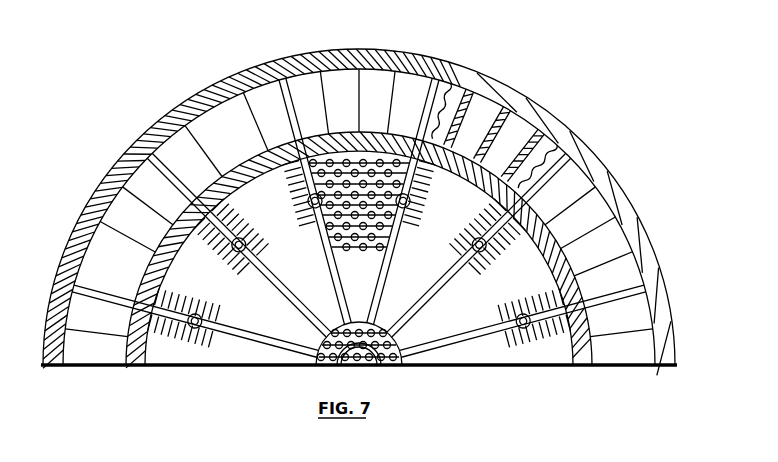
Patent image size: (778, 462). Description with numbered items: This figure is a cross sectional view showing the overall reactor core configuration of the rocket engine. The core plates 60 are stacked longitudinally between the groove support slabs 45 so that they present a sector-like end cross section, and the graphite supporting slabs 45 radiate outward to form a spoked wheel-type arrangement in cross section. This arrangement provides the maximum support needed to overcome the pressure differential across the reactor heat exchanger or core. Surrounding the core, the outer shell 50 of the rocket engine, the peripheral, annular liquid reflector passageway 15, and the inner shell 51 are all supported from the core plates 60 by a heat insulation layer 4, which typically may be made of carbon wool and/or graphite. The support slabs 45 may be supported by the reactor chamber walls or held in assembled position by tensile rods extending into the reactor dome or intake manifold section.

The heat insulation layer 4 is at (359, 242).
The peripheral, annular liquid reflector passageway 15 is at (573, 224).
The groove support slabs 45 is at (418, 183).
The outer shell 50 is at (359, 209).
The inner shell 51 is at (478, 245).
The plates 60 is at (359, 178).